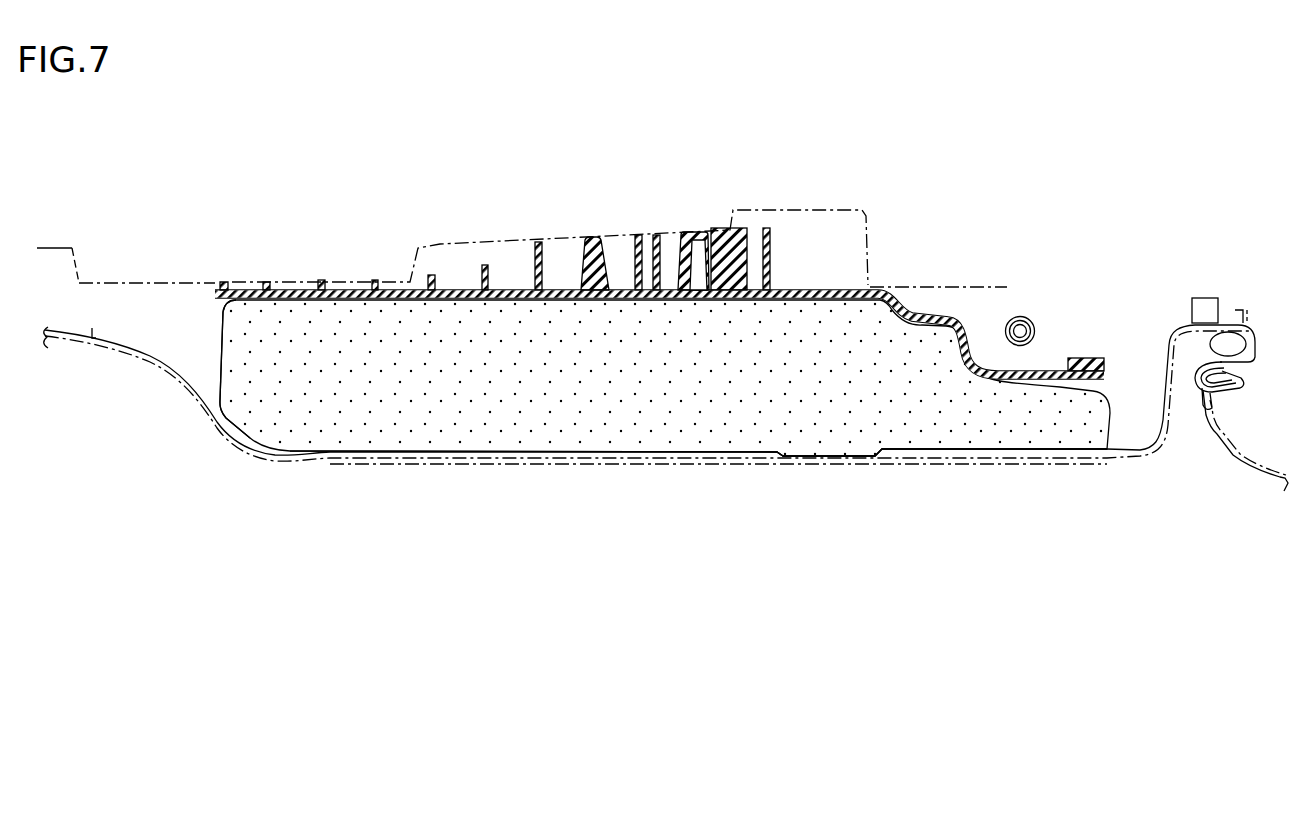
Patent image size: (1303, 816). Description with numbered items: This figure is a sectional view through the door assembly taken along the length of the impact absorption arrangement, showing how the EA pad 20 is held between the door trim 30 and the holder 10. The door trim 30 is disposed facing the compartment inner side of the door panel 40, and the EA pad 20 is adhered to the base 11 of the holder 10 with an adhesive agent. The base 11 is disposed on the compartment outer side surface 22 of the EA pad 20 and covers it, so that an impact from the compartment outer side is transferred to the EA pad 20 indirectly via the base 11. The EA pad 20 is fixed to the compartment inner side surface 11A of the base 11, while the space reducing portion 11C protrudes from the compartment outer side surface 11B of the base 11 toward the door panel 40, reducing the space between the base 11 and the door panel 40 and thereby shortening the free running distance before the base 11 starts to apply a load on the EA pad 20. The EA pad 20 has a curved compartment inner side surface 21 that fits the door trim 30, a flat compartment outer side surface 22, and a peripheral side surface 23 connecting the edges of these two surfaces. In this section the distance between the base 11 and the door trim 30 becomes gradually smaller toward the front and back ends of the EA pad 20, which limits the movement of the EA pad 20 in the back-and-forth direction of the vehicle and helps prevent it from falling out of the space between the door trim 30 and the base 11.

The holder 10 is at (512, 263).
The base 11 is at (460, 290).
The compartment inner side surface of the base 11A is at (1053, 380).
The compartment outer side surface of the base 11B is at (1011, 369).
The space reducing portion 11C is at (601, 247).
The EA pad 20 is at (196, 329).
The compartment inner side surface 21 is at (680, 455).
The compartment outer side surface 22 is at (706, 290).
The side surface 23 is at (220, 364).
The door trim 30 is at (189, 392).
The door panel 40 is at (868, 236).